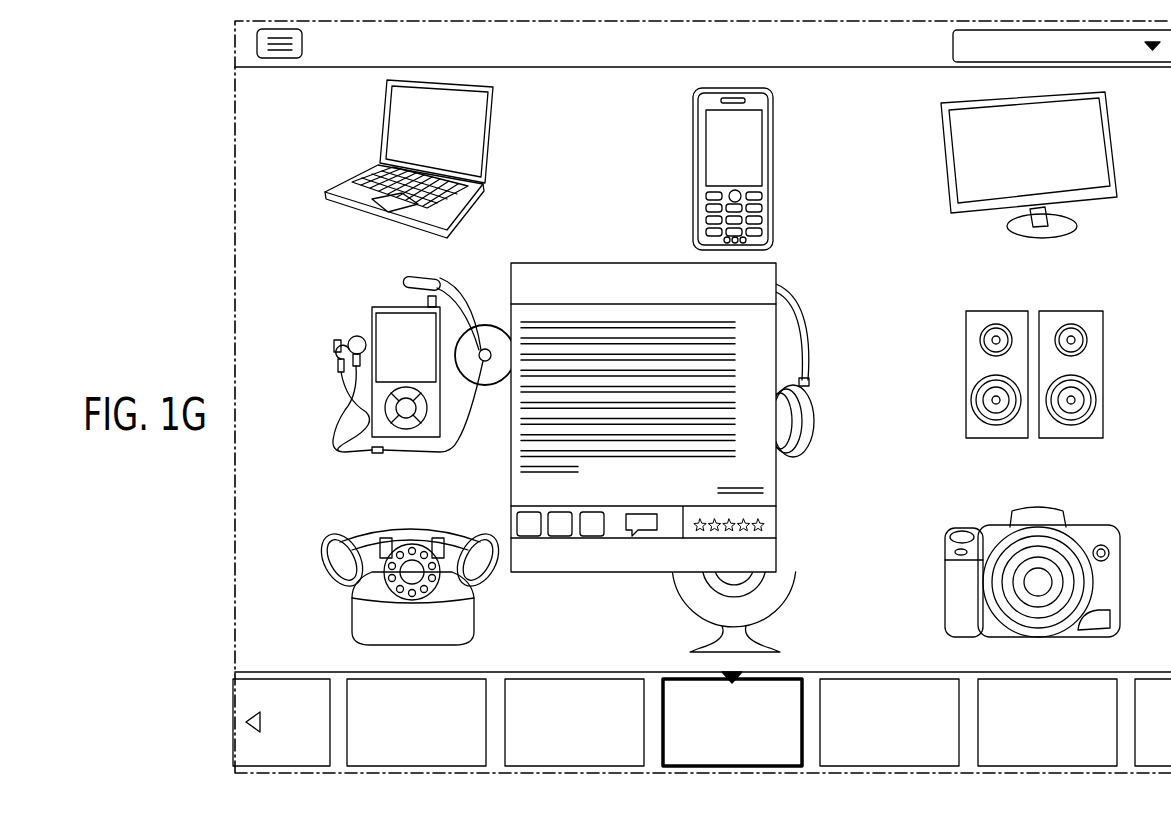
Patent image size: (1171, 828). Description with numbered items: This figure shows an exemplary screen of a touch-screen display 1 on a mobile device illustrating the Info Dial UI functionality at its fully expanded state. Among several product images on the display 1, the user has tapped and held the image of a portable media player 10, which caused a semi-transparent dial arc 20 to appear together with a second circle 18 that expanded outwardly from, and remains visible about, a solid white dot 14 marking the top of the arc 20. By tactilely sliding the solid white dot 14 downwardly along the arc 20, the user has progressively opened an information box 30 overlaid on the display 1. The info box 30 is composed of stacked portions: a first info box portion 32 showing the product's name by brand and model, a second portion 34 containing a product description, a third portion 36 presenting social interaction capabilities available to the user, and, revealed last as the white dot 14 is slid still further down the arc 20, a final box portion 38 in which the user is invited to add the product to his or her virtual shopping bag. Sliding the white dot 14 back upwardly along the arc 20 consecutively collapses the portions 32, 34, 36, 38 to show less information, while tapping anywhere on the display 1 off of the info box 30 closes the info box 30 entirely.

The touch-screen display 1 is at (260, 605).
The portable media player image 10 is at (372, 397).
The solid white dot 14 is at (485, 361).
The second circle 18 is at (492, 323).
The semi-transparent dial arc 20 is at (410, 276).
The information box 30 is at (607, 262).
The first info box portion 32 is at (762, 283).
The second info box portion 34 is at (757, 360).
The third info box portion 36 is at (766, 517).
The final box portion 38 is at (766, 558).